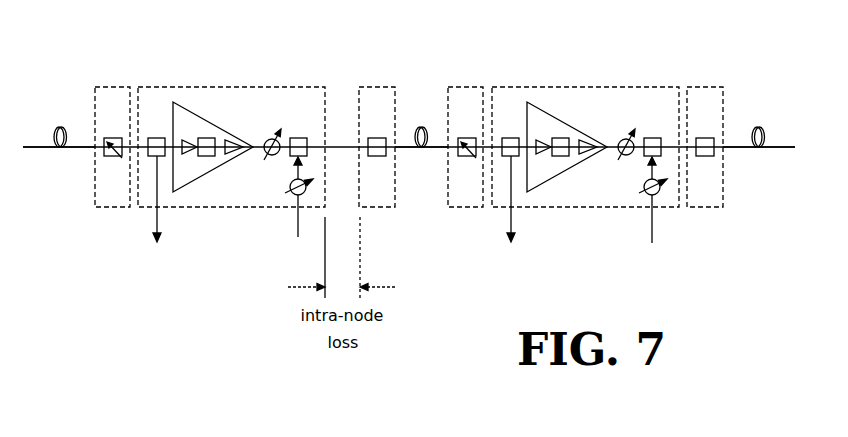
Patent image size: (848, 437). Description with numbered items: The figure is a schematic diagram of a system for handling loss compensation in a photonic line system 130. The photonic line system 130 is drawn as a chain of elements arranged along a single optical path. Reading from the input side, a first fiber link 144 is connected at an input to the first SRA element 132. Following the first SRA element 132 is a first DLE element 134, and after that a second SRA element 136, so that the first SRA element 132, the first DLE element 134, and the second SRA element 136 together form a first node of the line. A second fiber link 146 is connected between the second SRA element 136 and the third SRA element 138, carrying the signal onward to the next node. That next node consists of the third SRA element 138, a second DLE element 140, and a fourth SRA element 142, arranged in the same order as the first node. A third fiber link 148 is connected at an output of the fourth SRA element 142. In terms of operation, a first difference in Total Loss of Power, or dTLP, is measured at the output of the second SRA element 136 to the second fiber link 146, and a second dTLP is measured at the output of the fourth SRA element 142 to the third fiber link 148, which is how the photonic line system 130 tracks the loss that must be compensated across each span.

The photonic line system 130 is at (166, 360).
The first SRA element 132 is at (110, 207).
The first DLE element 134 is at (210, 207).
The second SRA element 136 is at (383, 207).
The third SRA element 138 is at (467, 208).
The second DLE element 140 is at (593, 208).
The fourth SRA element 142 is at (700, 208).
The first fiber link 144 is at (36, 150).
The second fiber link 146 is at (408, 147).
The third fiber link 148 is at (778, 152).